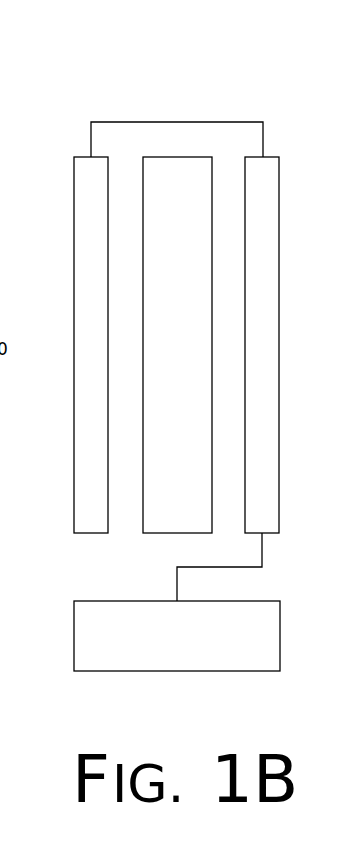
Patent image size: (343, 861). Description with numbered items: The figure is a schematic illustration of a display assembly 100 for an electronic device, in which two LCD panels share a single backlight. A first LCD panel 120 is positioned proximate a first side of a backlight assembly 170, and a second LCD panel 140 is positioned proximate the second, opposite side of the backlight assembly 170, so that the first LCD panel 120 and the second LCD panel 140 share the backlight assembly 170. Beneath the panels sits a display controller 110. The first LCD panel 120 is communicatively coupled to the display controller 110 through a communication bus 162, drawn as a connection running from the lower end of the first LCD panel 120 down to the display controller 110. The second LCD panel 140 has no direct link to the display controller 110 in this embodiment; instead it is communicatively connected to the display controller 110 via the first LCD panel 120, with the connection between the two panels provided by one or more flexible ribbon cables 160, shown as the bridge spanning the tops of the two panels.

The display assembly 100 is at (156, 74).
The flexible ribbon cable 160 is at (193, 122).
The second LCD panel 140 is at (75, 157).
The first LCD panel 120 is at (280, 157).
The backlight assembly 170 is at (177, 345).
The communication bus 162 is at (178, 584).
The display controller 110 is at (177, 636).